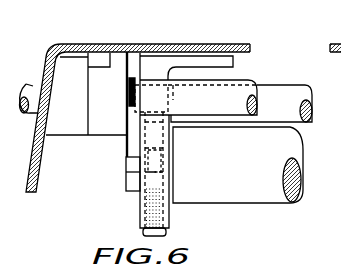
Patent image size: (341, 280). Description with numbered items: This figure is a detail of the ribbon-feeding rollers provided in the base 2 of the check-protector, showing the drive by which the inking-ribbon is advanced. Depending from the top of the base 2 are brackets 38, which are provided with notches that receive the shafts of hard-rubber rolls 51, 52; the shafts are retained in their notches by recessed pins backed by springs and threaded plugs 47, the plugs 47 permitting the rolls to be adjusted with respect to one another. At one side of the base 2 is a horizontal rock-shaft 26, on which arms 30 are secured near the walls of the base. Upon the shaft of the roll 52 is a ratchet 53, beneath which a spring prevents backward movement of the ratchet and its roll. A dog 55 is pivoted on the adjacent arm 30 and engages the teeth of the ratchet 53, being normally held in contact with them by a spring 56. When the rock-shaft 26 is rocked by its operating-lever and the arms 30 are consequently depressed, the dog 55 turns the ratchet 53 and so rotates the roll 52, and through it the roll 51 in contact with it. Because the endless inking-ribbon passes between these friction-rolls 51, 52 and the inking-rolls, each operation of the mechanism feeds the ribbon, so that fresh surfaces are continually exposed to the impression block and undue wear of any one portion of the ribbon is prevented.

The base 2 is at (138, 43).
The rock-shaft 26 is at (32, 70).
The arms 30 is at (103, 128).
The brackets 38 is at (141, 205).
The threaded plugs 47 is at (170, 236).
The hard-rubber roll 51 is at (273, 100).
The hard-rubber roll 52 is at (238, 165).
The ratchet 53 is at (133, 168).
The dog 55 is at (130, 128).
The spring 56 is at (128, 78).